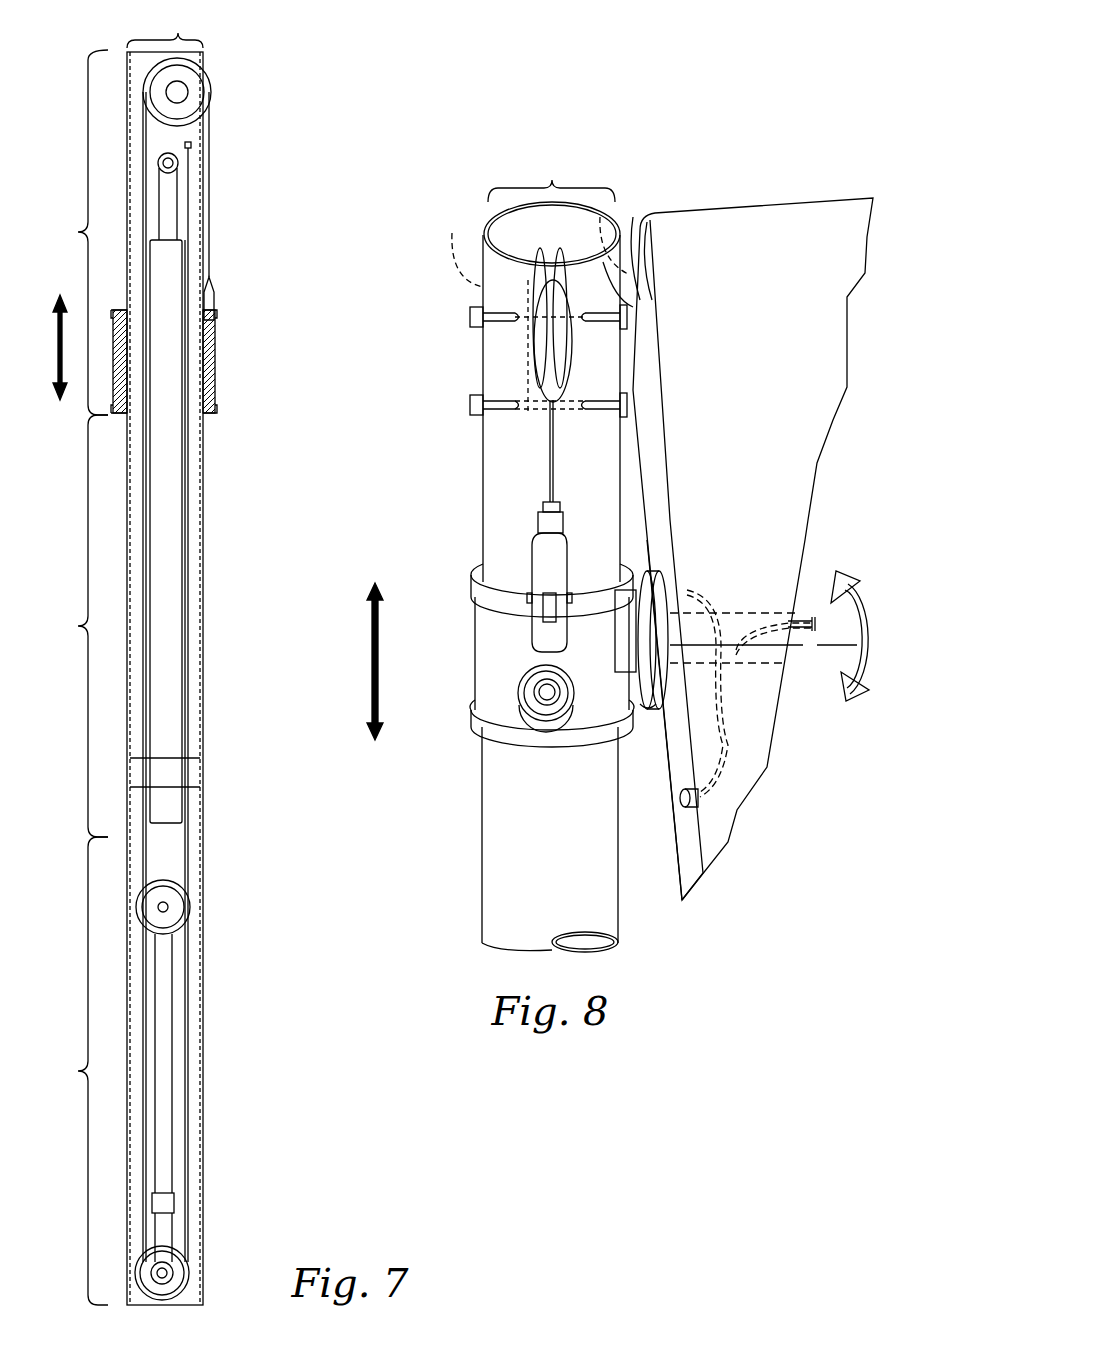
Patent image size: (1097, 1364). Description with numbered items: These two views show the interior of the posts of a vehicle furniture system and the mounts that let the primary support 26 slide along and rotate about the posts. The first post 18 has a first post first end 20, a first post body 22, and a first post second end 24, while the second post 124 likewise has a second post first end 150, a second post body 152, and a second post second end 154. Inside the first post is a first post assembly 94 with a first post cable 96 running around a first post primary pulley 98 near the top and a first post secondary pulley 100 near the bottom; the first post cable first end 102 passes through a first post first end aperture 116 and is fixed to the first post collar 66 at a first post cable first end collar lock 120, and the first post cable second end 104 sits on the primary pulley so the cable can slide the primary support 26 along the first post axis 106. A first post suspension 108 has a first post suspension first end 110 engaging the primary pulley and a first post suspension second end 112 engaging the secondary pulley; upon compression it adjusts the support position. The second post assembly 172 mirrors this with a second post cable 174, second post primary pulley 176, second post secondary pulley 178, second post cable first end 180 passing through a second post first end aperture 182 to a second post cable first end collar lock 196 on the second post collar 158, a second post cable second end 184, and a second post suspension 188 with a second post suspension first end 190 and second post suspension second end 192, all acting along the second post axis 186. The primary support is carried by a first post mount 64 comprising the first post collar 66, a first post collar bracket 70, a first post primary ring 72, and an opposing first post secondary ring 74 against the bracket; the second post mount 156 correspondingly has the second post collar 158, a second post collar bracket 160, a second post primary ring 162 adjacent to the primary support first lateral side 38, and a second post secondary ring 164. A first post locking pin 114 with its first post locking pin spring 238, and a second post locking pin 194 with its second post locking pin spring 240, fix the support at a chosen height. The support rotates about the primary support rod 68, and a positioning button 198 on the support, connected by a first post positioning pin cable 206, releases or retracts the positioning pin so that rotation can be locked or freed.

In FIG. 7, the first post 18 is at (179, 655).
In FIG. 8, the first post 18 is at (510, 577).
In FIG. 7, the second post 124 is at (179, 655).
In FIG. 8, the second post 124 is at (466, 880).
In FIG. 7, the first post first end 20 is at (75, 232).
In FIG. 7, the second post first end 150 is at (75, 232).
In FIG. 7, the first post body 22 is at (75, 626).
In FIG. 7, the second post body 152 is at (75, 626).
In FIG. 7, the first post second end 24 is at (75, 1071).
In FIG. 7, the second post second end 154 is at (75, 1071).
In FIG. 8, the primary support 26 is at (738, 180).
In FIG. 8, the primary support first lateral side 38 is at (682, 853).
In FIG. 8, the first post mount 64 is at (517, 700).
In FIG. 8, the second post mount 156 is at (452, 703).
In FIG. 7, the first post collar 66 is at (224, 361).
In FIG. 8, the first post collar 66 is at (513, 585).
In FIG. 7, the second post collar 158 is at (213, 353).
In FIG. 8, the second post collar 158 is at (477, 613).
In FIG. 8, the primary support rod 68 is at (763, 668).
In FIG. 8, the first post collar bracket 70 is at (696, 606).
In FIG. 8, the second post collar bracket 160 is at (633, 610).
In FIG. 8, the first post primary ring 72 is at (760, 677).
In FIG. 8, the second post primary ring 162 is at (667, 687).
In FIG. 8, the first post secondary ring 74 is at (650, 773).
In FIG. 8, the second post secondary ring 164 is at (648, 713).
In FIG. 7, the first post assembly 94 is at (171, 27).
In FIG. 8, the first post assembly 94 is at (551, 170).
In FIG. 7, the second post assembly 172 is at (171, 27).
In FIG. 8, the second post assembly 172 is at (551, 170).
In FIG. 7, the first post cable 96 is at (229, 678).
In FIG. 7, the second post cable 174 is at (208, 181).
In FIG. 7, the first post primary pulley 98 is at (237, 90).
In FIG. 8, the first post primary pulley 98 is at (482, 309).
In FIG. 7, the second post primary pulley 176 is at (208, 82).
In FIG. 8, the second post primary pulley 176 is at (518, 238).
In FIG. 7, the first post secondary pulley 100 is at (227, 1264).
In FIG. 7, the second post secondary pulley 178 is at (190, 1262).
In FIG. 7, the first post cable first end 102 is at (244, 677).
In FIG. 8, the first post cable first end 102 is at (481, 452).
In FIG. 7, the second post cable first end 180 is at (210, 247).
In FIG. 8, the second post cable first end 180 is at (549, 472).
In FIG. 7, the first post cable second end 104 is at (265, 136).
In FIG. 7, the second post cable second end 184 is at (193, 145).
In FIG. 7, the first post axis 106 is at (37, 347).
In FIG. 8, the first post axis 106 is at (341, 661).
In FIG. 7, the second post axis 186 is at (57, 318).
In FIG. 8, the second post axis 186 is at (341, 661).
In FIG. 7, the first post suspension 108 is at (247, 531).
In FIG. 7, the second post suspension 188 is at (168, 487).
In FIG. 7, the first post suspension first end 110 is at (251, 196).
In FIG. 7, the second post suspension first end 190 is at (170, 212).
In FIG. 7, the first post suspension second end 112 is at (235, 1098).
In FIG. 7, the second post suspension second end 192 is at (165, 1231).
In FIG. 8, the first post locking pin 114 is at (489, 689).
In FIG. 8, the second post locking pin 194 is at (528, 680).
In FIG. 8, the first post first end aperture 116 is at (517, 361).
In FIG. 8, the second post first end aperture 182 is at (540, 400).
In FIG. 7, the first post cable first end collar lock 120 is at (277, 298).
In FIG. 8, the first post cable first end collar lock 120 is at (491, 577).
In FIG. 7, the second post cable first end collar lock 196 is at (214, 297).
In FIG. 8, the second post cable first end collar lock 196 is at (535, 558).
In FIG. 8, the positioning button 198 is at (685, 808).
In FIG. 8, the first post positioning pin cable 206 is at (731, 778).
In FIG. 8, the first post locking pin spring 238 is at (487, 768).
In FIG. 8, the second post locking pin spring 240 is at (528, 700).